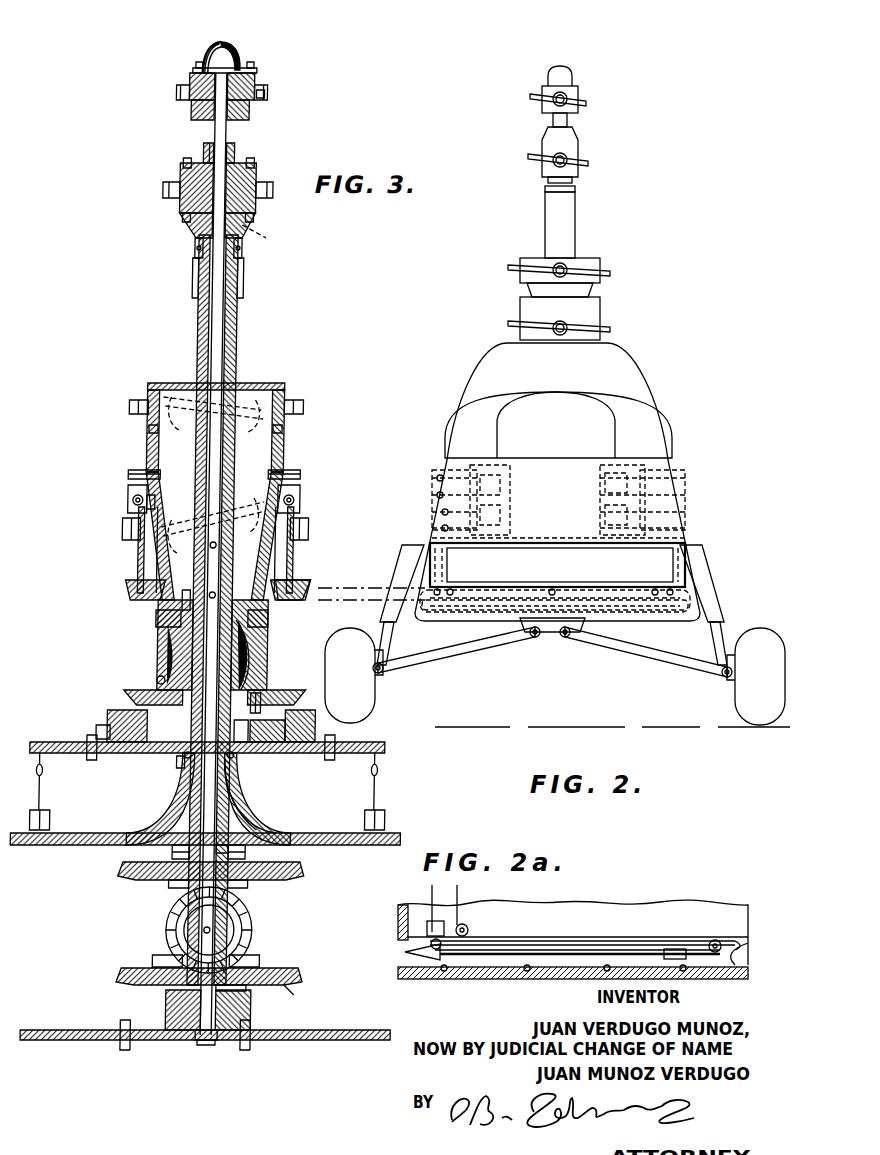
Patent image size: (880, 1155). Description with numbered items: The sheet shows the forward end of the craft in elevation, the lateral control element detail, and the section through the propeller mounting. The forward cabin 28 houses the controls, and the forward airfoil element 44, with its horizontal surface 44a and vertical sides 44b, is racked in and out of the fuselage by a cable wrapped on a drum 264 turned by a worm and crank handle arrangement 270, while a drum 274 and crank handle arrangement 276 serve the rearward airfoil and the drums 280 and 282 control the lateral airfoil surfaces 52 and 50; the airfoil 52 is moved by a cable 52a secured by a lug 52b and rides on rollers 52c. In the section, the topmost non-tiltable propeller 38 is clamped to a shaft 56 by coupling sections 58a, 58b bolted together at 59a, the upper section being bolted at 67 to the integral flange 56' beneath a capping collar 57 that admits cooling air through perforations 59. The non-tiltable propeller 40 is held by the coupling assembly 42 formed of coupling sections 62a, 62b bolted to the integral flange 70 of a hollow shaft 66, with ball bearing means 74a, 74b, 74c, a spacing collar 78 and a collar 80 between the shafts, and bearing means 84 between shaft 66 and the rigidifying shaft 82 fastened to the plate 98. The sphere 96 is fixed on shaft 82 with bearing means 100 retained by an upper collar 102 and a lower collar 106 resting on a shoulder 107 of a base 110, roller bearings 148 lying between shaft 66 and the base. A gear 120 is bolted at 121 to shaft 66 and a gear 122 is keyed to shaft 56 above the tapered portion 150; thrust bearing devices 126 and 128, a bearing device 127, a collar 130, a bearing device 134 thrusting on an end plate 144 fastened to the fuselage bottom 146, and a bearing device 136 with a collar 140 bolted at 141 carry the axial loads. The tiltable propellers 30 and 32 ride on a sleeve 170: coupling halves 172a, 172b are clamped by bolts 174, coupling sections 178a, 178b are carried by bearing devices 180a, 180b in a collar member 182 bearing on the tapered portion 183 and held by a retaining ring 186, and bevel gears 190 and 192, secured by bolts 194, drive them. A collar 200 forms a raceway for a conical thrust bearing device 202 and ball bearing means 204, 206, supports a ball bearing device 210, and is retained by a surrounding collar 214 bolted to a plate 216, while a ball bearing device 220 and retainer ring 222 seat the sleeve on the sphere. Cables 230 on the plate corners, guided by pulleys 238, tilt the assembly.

In FIG. 2, the forward cabin 28 is at (610, 410).
In FIG. 3, the tiltable propeller 30 is at (260, 395).
In FIG. 3, the tiltable propeller 32 is at (260, 500).
In FIG. 3, the non-tiltable propeller 38 is at (268, 80).
In FIG. 3, the non-tiltable propeller 40 is at (266, 236).
In FIG. 3, the flange assembly 42 is at (278, 180).
In FIG. 2, the forward airfoil element 44 is at (430, 545).
In FIG. 2, the horizontal surface 44a is at (556, 580).
In FIG. 2, the vertical side 44b is at (445, 570).
In FIG. 2, the lateral airfoil surface 50 is at (650, 605).
In FIG. 2, the lateral airfoil surface 52 is at (475, 605).
In FIG. 2A, the lateral airfoil surface 52 is at (588, 940).
In FIG. 2A, the cable 52a is at (530, 945).
In FIG. 2A, the lug 52b is at (680, 950).
In FIG. 2A, the roller 52c is at (526, 968).
In FIG. 3, the shaft 56 is at (244, 554).
In FIG. 3, the integral flange 56' is at (247, 41).
In FIG. 3, the capping collar 57 is at (206, 60).
In FIG. 3, the upper coupling section 58a is at (250, 72).
In FIG. 3, the lower coupling section 58b is at (252, 110).
In FIG. 3, the perforations 59 is at (212, 52).
In FIG. 3, the bolts 59a is at (266, 93).
In FIG. 3, the upper coupling section 62a is at (186, 165).
In FIG. 3, the lower coupling section 62b is at (186, 217).
In FIG. 3, the shaft 66 is at (200, 244).
In FIG. 3, the bolts 67 is at (200, 78).
In FIG. 3, the integral flange 70 is at (195, 225).
In FIG. 3, the ball bearing means 74a is at (237, 152).
In FIG. 3, the ball bearing means 74b is at (240, 168).
In FIG. 3, the ball bearing means 74c is at (245, 228).
In FIG. 3, the spacing collar 78 is at (166, 193).
In FIG. 3, the collar 80 is at (206, 158).
In FIG. 3, the rigidifying shaft 82 is at (242, 335).
In FIG. 3, the bearing means 84 is at (199, 262).
In FIG. 3, the sphere 96 is at (278, 645).
In FIG. 3, the plate 98 is at (360, 833).
In FIG. 3, the bearing means 100 is at (246, 600).
In FIG. 3, the upper collar 102 is at (194, 596).
In FIG. 3, the lower collar 106 is at (258, 776).
In FIG. 3, the shoulder 107 is at (196, 758).
In FIG. 3, the base 110 is at (186, 810).
In FIG. 3, the gear 120 is at (308, 864).
In FIG. 3, the bolts 121 is at (259, 855).
In FIG. 3, the gear 122 is at (310, 995).
In FIG. 3, the thrust bearing device 126 is at (270, 960).
In FIG. 3, the bearing device 127 is at (183, 884).
In FIG. 3, the thrust bearing device 128 is at (250, 990).
In FIG. 3, the collar 130 is at (184, 910).
In FIG. 3, the bearing device 134 is at (224, 1046).
In FIG. 3, the bearing device 136 is at (256, 822).
In FIG. 3, the collar 140 is at (186, 852).
In FIG. 3, the bolts 141 is at (270, 850).
In FIG. 3, the end plate 144 is at (182, 1015).
In FIG. 3, the fuselage bottom 146 is at (362, 1018).
In FIG. 3, the roller bearings 148 is at (189, 760).
In FIG. 3, the tapered portion 150 is at (165, 972).
In FIG. 3, the sleeve 170 is at (270, 386).
In FIG. 3, the upper coupling half 172a is at (154, 400).
In FIG. 3, the upper coupling half 172b is at (156, 428).
In FIG. 3, the bolts 174 is at (166, 420).
In FIG. 3, the coupling section 178a is at (131, 527).
In FIG. 3, the coupling section 178b is at (147, 556).
In FIG. 3, the bearing device 180a is at (308, 495).
In FIG. 3, the bearing device 180b is at (135, 588).
In FIG. 3, the collar member 182 is at (136, 500).
In FIG. 3, the tapered portion 183 is at (157, 508).
In FIG. 3, the retaining ring 186 is at (292, 474).
In FIG. 3, the bevel gear 190 is at (300, 585).
In FIG. 3, the bevel gear 192 is at (298, 702).
In FIG. 3, the bolts 194 is at (270, 693).
In FIG. 3, the collar 200 is at (255, 740).
In FIG. 3, the conical thrust bearing device 202 is at (280, 745).
In FIG. 3, the ball bearing means 204 is at (140, 703).
In FIG. 3, the ball bearing means 206 is at (126, 716).
In FIG. 3, the ball bearing device 210 is at (168, 680).
In FIG. 3, the surrounding collar 214 is at (110, 732).
In FIG. 3, the plate 216 is at (38, 740).
In FIG. 3, the ball bearing device 220 is at (262, 635).
In FIG. 3, the retainer ring 222 is at (166, 616).
In FIG. 3, the cable 230 is at (52, 791).
In FIG. 3, the pulley 238 is at (43, 815).
In FIG. 2, the drum 264 is at (680, 520).
In FIG. 2, the worm and crank handle arrangement 270 is at (590, 515).
In FIG. 2, the drum 274 is at (660, 465).
In FIG. 2, the crank handle arrangement 276 is at (600, 478).
In FIG. 2, the drum 280 is at (500, 485).
In FIG. 2, the drum 282 is at (500, 518).